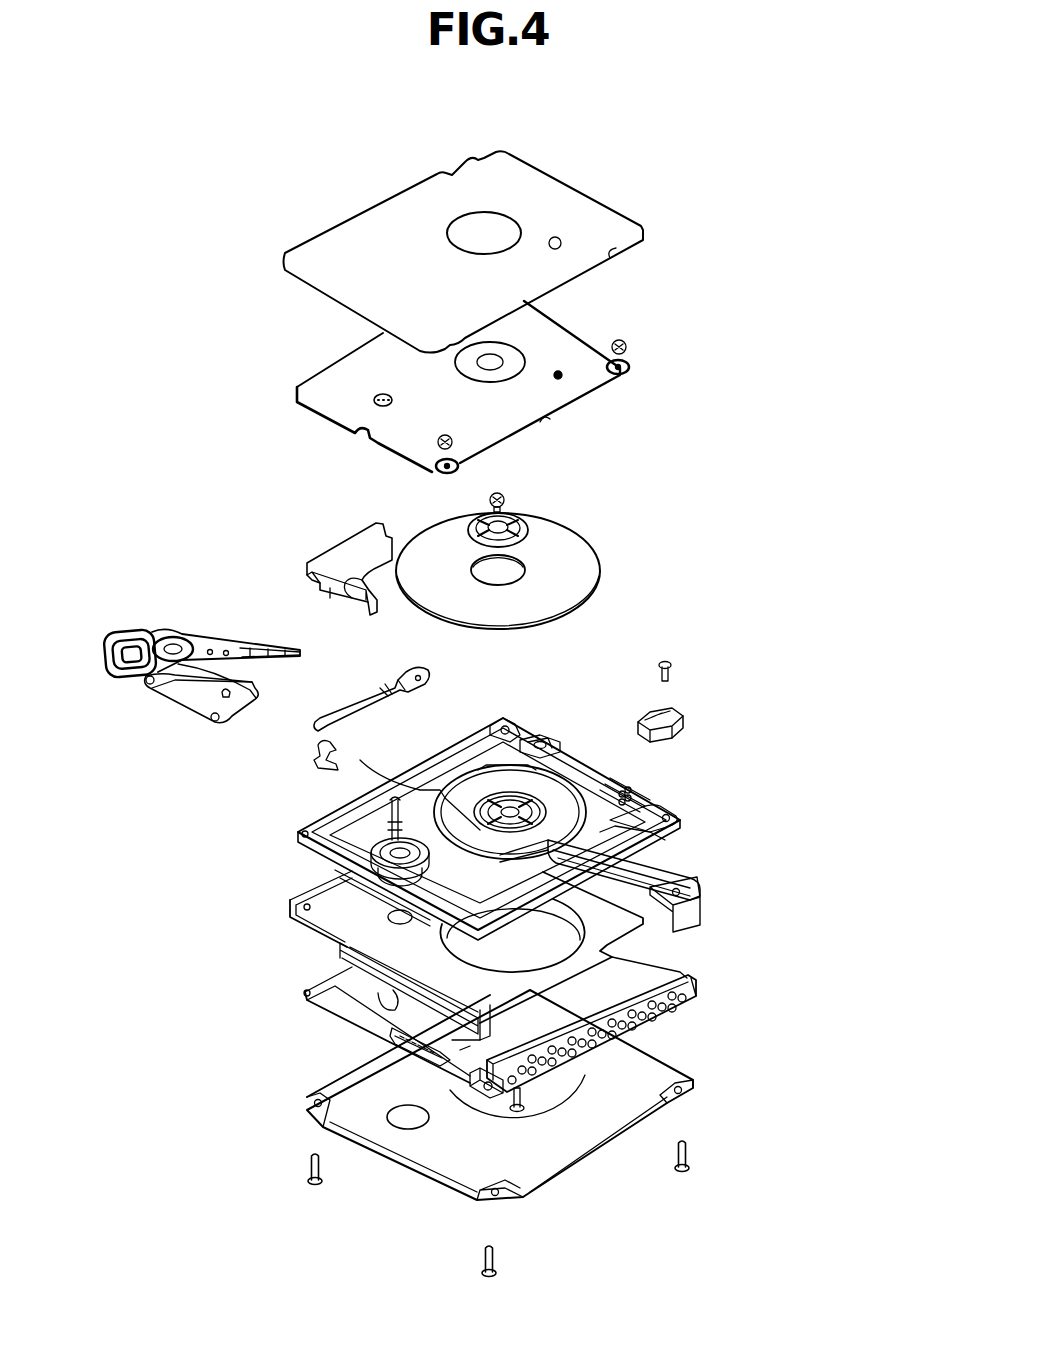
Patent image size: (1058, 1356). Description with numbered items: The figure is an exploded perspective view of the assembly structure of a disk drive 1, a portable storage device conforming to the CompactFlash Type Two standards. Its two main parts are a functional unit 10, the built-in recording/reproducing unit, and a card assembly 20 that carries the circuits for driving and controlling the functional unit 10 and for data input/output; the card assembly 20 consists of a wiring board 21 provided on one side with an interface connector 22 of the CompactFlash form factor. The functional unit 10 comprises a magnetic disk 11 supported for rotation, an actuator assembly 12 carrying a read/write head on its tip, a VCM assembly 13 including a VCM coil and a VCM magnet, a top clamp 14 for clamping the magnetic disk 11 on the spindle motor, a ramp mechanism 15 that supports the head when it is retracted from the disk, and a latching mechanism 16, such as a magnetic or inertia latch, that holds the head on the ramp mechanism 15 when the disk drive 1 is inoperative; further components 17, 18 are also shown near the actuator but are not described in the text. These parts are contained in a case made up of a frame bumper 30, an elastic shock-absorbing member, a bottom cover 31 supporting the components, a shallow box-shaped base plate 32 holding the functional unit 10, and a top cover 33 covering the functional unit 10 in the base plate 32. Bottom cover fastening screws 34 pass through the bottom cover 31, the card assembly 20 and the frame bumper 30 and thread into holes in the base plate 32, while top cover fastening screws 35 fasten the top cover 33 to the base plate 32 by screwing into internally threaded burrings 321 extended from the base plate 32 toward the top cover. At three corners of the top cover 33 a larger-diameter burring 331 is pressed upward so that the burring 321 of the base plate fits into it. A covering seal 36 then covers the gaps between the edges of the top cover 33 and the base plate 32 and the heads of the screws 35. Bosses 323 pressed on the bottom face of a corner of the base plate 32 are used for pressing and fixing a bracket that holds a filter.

The disk drive 1 is at (712, 221).
The functional unit 10 is at (776, 462).
The magnetic disk 11 is at (602, 571).
The actuator assembly 12 is at (215, 645).
The VCM assembly 13 is at (310, 553).
The top clamp 14 is at (517, 510).
The ramp mechanism 15 is at (683, 720).
The latching mechanism 16 is at (392, 720).
The ramp 17 is at (170, 702).
The flexible cable 18 is at (257, 680).
The card assembly 20 is at (637, 957).
The wiring board 21 is at (652, 940).
The connector 22 is at (665, 1012).
The frame bumper 30 is at (682, 876).
The bottom cover 31 is at (690, 1078).
The base plate 32 is at (636, 780).
The burring 321 is at (533, 722).
The bosses 323 is at (640, 836).
The top cover 33 is at (577, 326).
The burring 331 is at (628, 370).
The bottom cover fastening screws 34 is at (694, 1156).
The top cover fastening screws 35 is at (627, 347).
The covering seal 36 is at (577, 190).